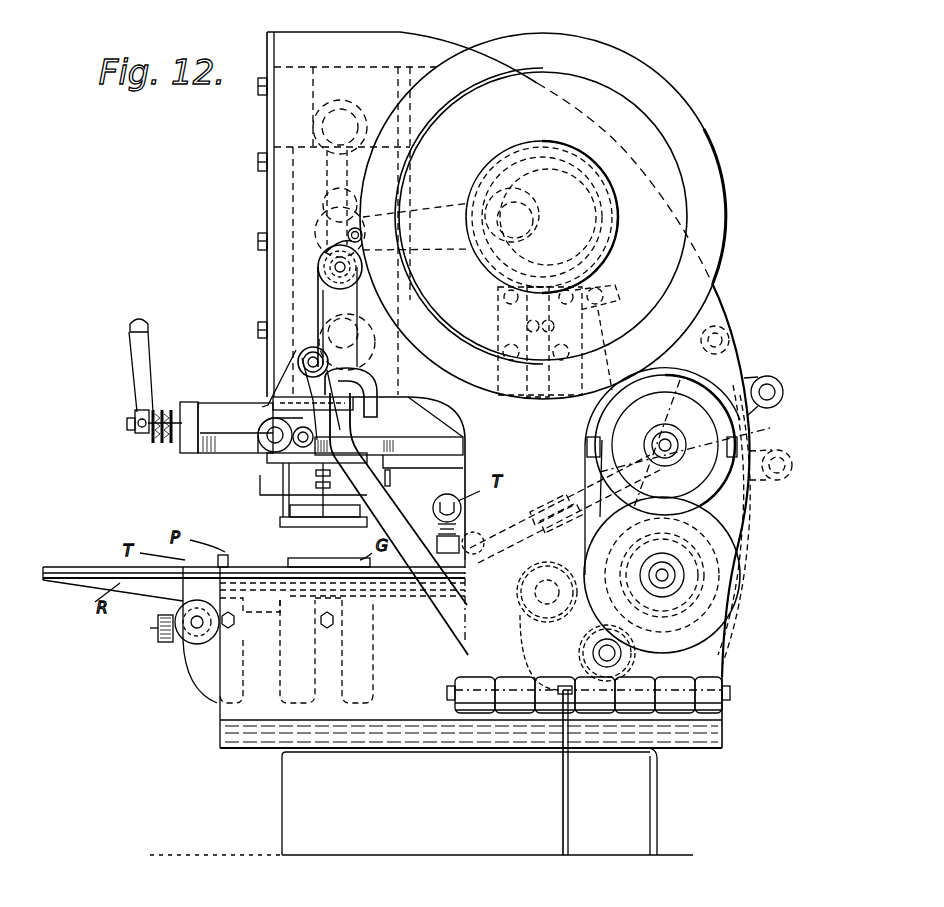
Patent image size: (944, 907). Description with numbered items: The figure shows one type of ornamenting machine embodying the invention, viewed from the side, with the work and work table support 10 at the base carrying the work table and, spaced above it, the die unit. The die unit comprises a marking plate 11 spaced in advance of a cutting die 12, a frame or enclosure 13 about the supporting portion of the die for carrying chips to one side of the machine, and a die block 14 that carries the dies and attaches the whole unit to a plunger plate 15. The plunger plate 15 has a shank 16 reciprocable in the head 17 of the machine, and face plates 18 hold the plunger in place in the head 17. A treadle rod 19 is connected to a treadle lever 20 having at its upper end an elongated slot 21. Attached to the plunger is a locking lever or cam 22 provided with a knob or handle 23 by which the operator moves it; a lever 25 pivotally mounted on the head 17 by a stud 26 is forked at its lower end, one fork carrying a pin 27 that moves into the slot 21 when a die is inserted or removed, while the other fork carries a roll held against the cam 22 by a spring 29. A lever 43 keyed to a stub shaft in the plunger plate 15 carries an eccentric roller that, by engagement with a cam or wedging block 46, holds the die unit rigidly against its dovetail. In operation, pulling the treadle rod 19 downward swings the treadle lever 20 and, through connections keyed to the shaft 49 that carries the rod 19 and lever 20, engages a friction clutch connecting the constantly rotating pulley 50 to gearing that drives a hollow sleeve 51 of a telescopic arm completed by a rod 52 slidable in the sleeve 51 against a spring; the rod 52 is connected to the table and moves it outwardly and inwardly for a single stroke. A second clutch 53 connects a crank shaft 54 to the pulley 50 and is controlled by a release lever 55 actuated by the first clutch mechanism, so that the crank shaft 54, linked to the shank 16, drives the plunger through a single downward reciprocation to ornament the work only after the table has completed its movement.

The work and work table support 10 is at (340, 598).
The marking plate 11 is at (282, 526).
The cutting die 12 is at (268, 497).
The frame or enclosure 13 is at (392, 478).
The die block 14 is at (280, 460).
The plunger plate 15 is at (200, 451).
The shank 16 is at (292, 297).
The head 17 is at (331, 30).
The face plates 18 is at (267, 213).
The treadle rod 19 is at (562, 810).
The treadle lever 20 is at (480, 645).
The elongated slot 21 is at (337, 408).
The locking lever or cam 22 is at (287, 377).
The knob or handle 23 is at (262, 428).
The lever 25 is at (326, 313).
The stud 26 is at (334, 263).
The pin 27 is at (362, 418).
The spring 29 is at (319, 293).
The lever 43 is at (138, 380).
The cam or wedging block 46 is at (723, 583).
The shaft 49 is at (730, 694).
The pulley 50 is at (658, 87).
The hollow sleeve 51 is at (556, 485).
The rod 52 is at (484, 549).
The second clutch 53 is at (590, 272).
The crank shaft 54 is at (472, 184).
The release lever 55 is at (620, 308).